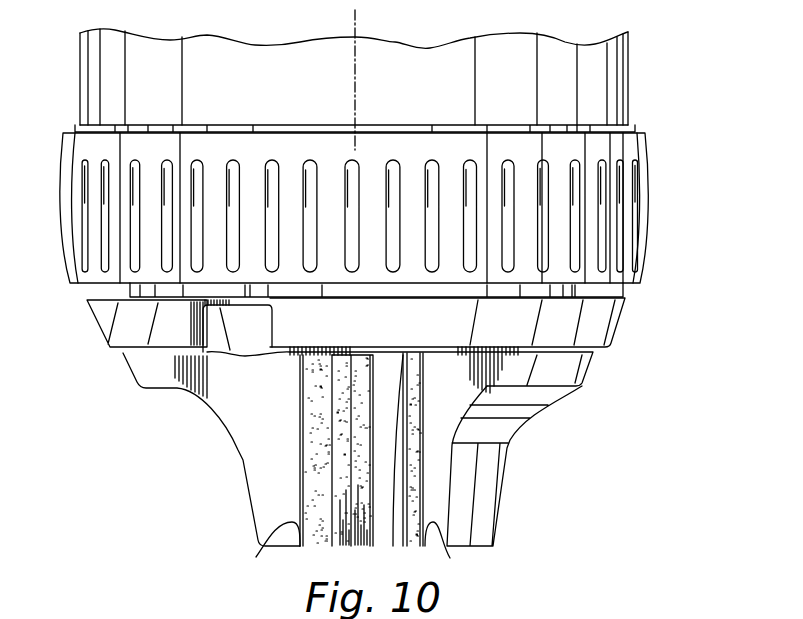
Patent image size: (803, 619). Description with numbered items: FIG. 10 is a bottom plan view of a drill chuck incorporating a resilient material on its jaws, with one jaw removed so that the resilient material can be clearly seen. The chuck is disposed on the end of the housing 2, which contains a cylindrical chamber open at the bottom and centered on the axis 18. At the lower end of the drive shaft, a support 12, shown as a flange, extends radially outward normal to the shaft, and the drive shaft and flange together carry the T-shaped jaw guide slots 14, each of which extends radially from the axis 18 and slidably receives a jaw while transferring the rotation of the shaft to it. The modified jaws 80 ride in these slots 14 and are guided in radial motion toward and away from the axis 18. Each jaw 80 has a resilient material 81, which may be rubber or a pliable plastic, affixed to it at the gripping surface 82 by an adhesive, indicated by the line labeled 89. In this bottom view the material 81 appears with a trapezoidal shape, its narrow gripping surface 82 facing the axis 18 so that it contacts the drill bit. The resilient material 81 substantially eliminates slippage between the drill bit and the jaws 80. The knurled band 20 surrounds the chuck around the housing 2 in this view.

The housing 2 is at (630, 68).
The axis 18 is at (355, 29).
The slotted band 20 is at (652, 187).
The support 12 is at (623, 322).
The jaw guide slots 14 is at (194, 323).
The modified jaw 80 is at (240, 458).
The resilient material 81 is at (321, 547).
The gripping surface 82 is at (340, 548).
The adhesive line 89 is at (355, 549).